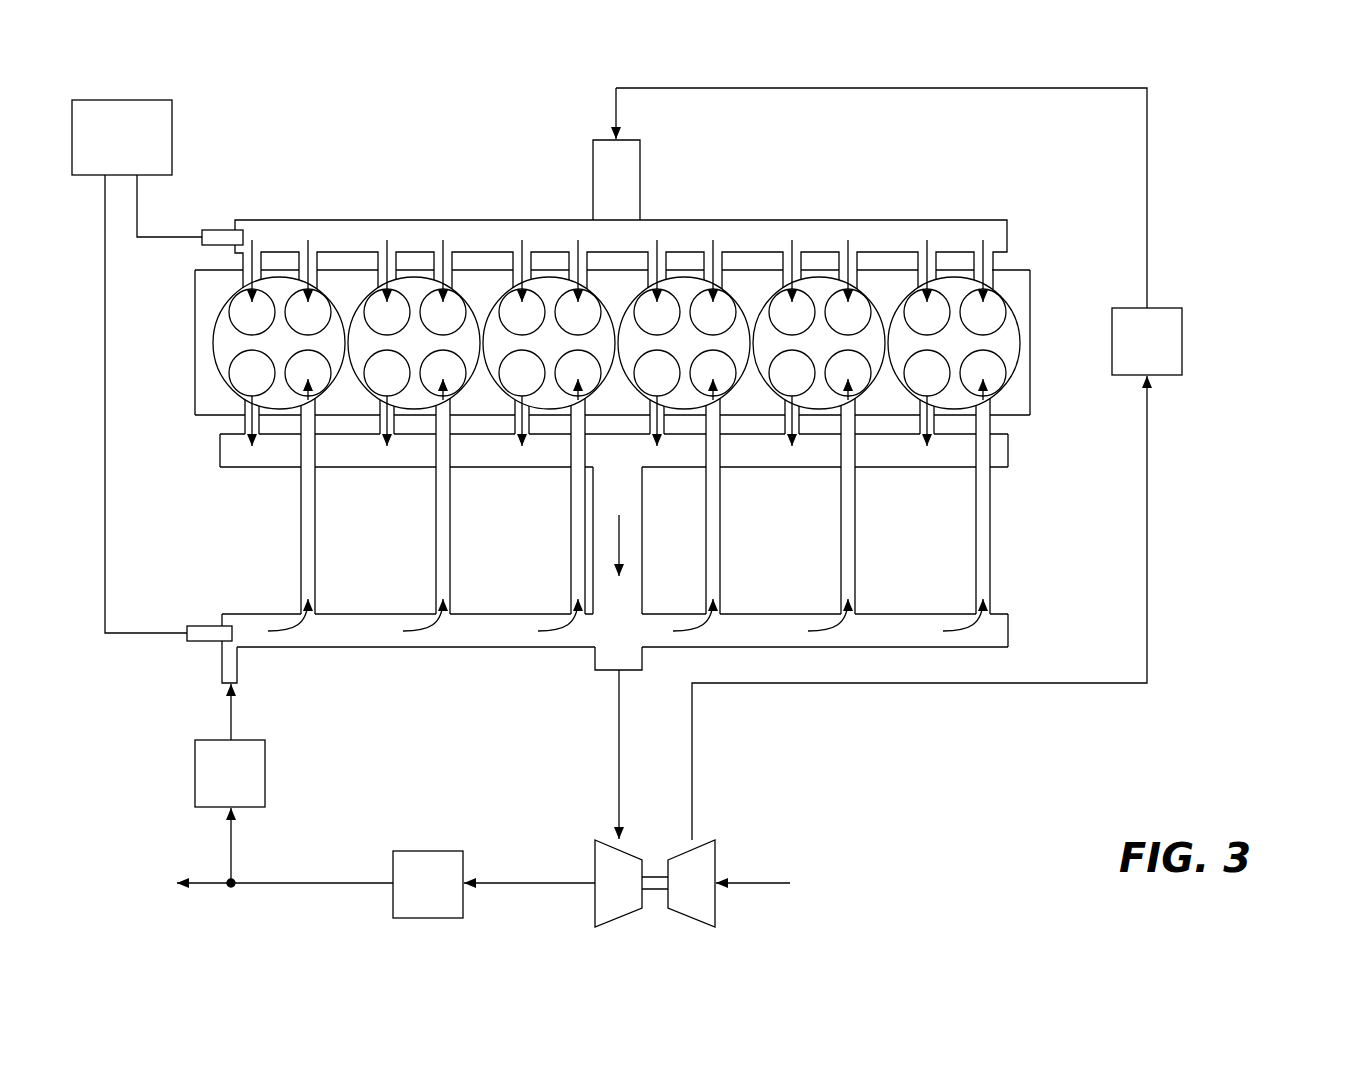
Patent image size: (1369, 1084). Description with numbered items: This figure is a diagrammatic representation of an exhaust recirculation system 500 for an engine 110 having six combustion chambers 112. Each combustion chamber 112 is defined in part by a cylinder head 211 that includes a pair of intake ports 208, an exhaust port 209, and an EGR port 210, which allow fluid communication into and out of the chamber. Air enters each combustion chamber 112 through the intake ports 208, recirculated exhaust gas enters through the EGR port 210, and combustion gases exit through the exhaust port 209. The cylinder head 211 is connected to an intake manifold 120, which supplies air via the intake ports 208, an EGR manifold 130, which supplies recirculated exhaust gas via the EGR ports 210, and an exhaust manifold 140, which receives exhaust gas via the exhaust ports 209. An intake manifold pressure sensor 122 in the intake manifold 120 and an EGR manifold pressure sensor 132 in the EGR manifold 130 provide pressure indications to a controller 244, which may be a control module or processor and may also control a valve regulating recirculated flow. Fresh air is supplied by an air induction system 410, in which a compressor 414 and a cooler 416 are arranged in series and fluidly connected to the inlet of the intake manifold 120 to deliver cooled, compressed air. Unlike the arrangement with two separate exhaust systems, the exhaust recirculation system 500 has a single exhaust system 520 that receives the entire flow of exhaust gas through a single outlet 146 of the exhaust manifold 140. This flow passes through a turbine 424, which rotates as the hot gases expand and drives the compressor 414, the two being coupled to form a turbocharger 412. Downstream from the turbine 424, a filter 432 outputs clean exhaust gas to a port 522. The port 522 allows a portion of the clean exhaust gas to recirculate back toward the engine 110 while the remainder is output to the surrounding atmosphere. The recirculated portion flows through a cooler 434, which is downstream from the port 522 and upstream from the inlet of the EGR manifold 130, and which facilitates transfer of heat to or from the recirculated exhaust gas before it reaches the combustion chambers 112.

The exhaust recirculation system 500 is at (1281, 159).
The engine 110 is at (646, 366).
The combustion chamber 112 is at (970, 352).
The intake manifold 120 is at (862, 229).
The intake manifold pressure sensor 122 is at (217, 232).
The EGR manifold 130 is at (511, 623).
The EGR manifold pressure sensor 132 is at (200, 630).
The exhaust manifold 140 is at (482, 460).
The single outlet 146 is at (597, 673).
The intake port 208 is at (1000, 326).
The exhaust port 209 is at (944, 387).
The EGR port 210 is at (1000, 387).
The cylinder head 211 is at (1032, 276).
The controller 244 is at (105, 150).
The air induction system 410 is at (971, 817).
The turbocharger 412 is at (659, 859).
The compressor 414 is at (710, 910).
The cooler 416 is at (1173, 327).
The turbine 424 is at (603, 860).
The filter 432 is at (435, 858).
The cooler 434 is at (257, 768).
The exhaust system 520 is at (433, 744).
The port 522 is at (233, 882).